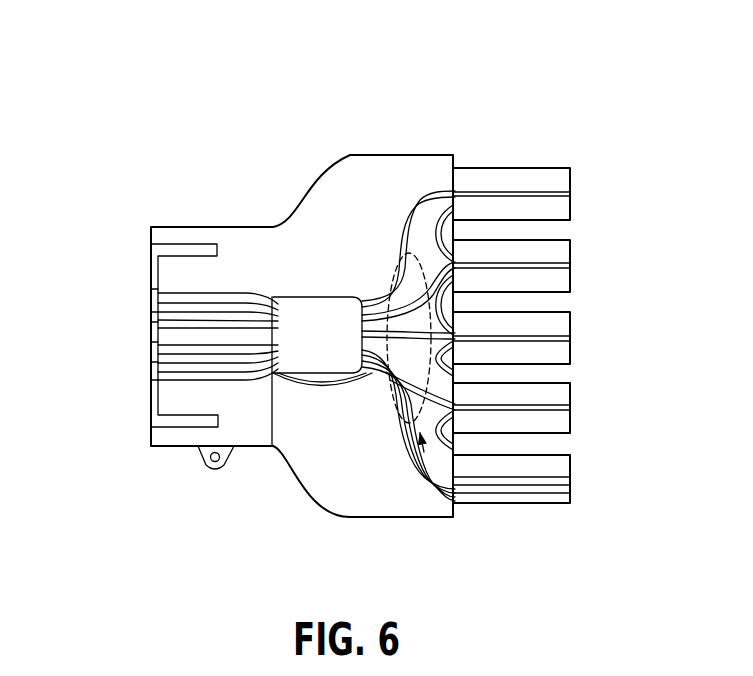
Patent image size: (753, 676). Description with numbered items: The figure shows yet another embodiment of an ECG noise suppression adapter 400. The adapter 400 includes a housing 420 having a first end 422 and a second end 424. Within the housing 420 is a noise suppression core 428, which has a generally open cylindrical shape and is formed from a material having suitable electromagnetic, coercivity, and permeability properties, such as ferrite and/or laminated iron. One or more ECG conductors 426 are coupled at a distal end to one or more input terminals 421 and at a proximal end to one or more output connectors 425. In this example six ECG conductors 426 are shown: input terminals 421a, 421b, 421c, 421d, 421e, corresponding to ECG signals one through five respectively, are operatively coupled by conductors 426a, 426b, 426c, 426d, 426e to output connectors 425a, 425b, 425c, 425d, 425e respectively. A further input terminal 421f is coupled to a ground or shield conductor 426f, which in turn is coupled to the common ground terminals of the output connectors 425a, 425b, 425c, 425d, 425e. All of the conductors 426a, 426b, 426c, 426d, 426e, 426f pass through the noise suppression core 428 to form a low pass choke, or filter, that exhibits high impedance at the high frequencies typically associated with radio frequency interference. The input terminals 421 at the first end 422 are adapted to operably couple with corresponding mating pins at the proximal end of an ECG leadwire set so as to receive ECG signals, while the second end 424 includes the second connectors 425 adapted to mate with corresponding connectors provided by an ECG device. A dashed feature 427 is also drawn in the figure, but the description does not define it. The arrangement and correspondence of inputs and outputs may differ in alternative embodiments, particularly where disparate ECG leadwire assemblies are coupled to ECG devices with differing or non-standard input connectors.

The ECG noise suppression adapter 400 is at (322, 100).
The housing 420 is at (325, 487).
The input terminals 421 is at (153, 319).
The input terminal 421a is at (154, 289).
The input terminal 421b is at (154, 312).
The input terminal 421c is at (154, 322).
The input terminal 421d is at (154, 342).
The input terminal 421e is at (154, 362).
The input terminal 421f is at (154, 380).
The first end 422 is at (156, 283).
The second end 424 is at (516, 153).
The output connectors 425 is at (589, 525).
The output connector 425a is at (570, 192).
The output connector 425b is at (570, 263).
The output connector 425c is at (570, 338).
The output connector 425d is at (570, 407).
The output connector 425e is at (570, 478).
The ECG conductors 426 is at (314, 379).
The conductor 426a is at (198, 293).
The conductor 426b is at (218, 312).
The conductor 426c is at (240, 327).
The conductor 426d is at (220, 341).
The conductor 426e is at (243, 345).
The ground conductor 426f is at (455, 222).
The strain relief 427 is at (398, 257).
The noise suppression core 428 is at (312, 313).